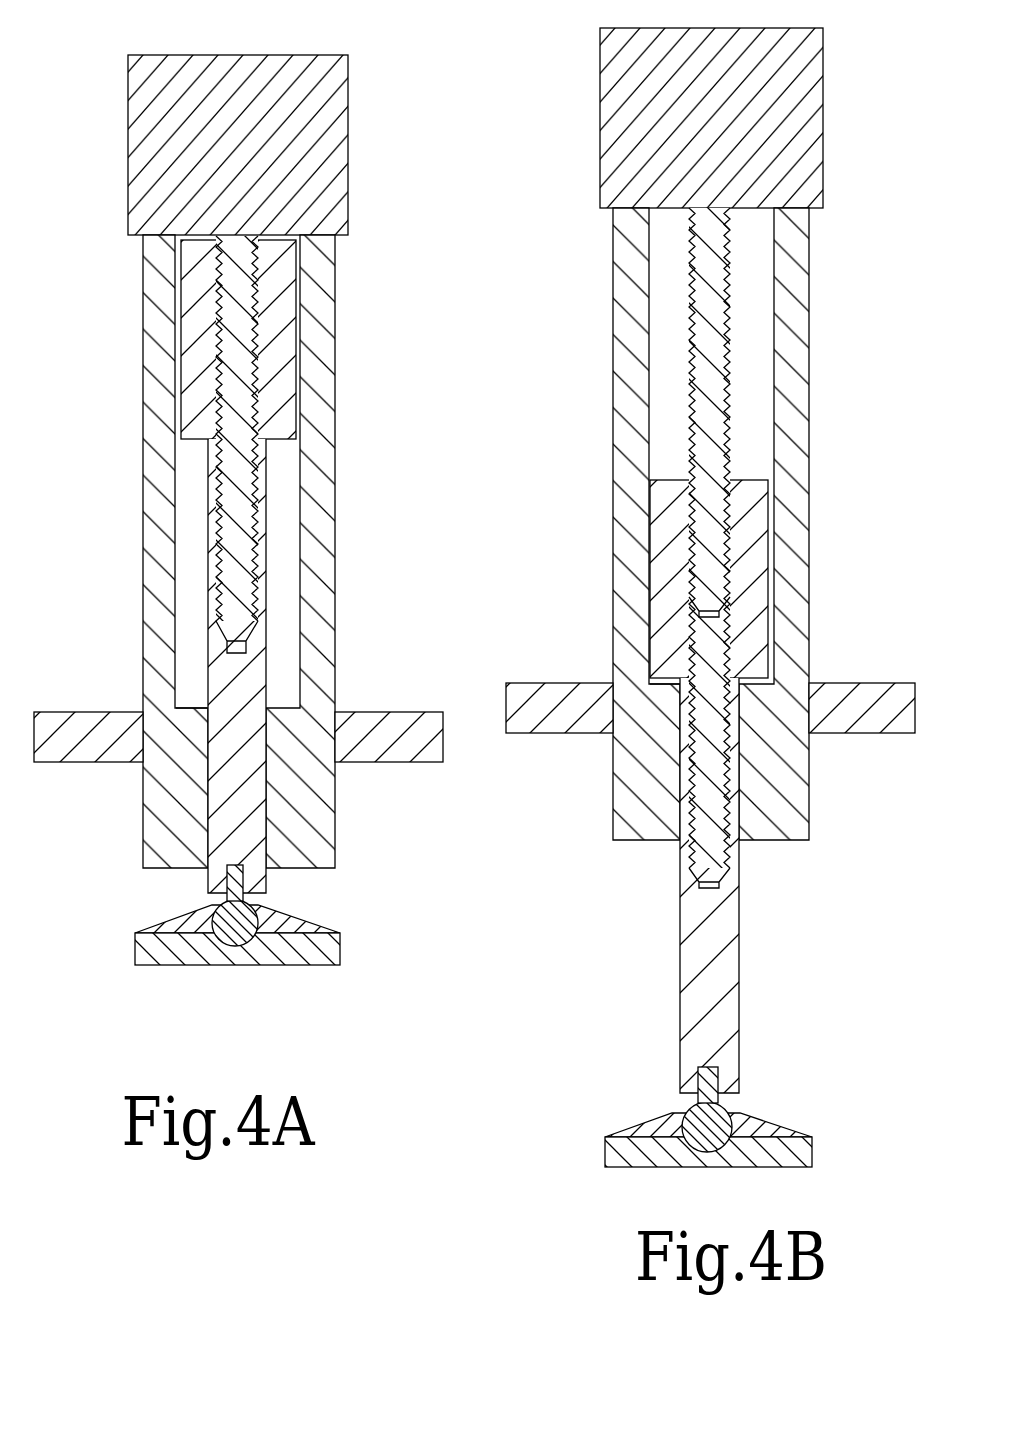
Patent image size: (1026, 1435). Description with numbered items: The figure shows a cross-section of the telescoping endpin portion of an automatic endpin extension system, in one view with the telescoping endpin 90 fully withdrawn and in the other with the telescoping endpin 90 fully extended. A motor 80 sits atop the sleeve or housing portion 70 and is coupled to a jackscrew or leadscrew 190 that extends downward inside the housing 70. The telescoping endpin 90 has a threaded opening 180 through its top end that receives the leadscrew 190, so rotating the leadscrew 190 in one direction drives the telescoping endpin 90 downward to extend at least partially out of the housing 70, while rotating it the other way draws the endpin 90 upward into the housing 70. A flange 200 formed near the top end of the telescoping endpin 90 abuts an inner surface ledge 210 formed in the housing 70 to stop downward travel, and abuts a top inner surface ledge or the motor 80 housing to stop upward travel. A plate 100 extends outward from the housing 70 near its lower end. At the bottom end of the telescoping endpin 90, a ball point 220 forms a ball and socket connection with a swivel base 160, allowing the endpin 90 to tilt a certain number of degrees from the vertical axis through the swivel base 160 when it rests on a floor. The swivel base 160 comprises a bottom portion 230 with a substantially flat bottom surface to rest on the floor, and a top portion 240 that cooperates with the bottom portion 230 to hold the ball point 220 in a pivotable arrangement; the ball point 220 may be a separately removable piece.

In FIG. 4A, the sleeve or housing portion 70 is at (143, 458).
In FIG. 4B, the sleeve or housing portion 70 is at (809, 503).
In FIG. 4A, the motor 80 is at (129, 156).
In FIG. 4B, the motor 80 is at (823, 108).
In FIG. 4A, the telescoping endpin 90 is at (205, 882).
In FIG. 4B, the telescoping endpin 90 is at (738, 995).
In FIG. 4A, the mounting plate 100 is at (90, 712).
In FIG. 4B, the mounting plate 100 is at (877, 733).
In FIG. 4A, the swivel base 160 is at (330, 933).
In FIG. 4B, the swivel base 160 is at (603, 1132).
In FIG. 4A, the threaded opening 180 is at (233, 647).
In FIG. 4B, the threaded opening 180 is at (707, 662).
In FIG. 4A, the leadscrew 190 is at (203, 330).
In FIG. 4B, the leadscrew 190 is at (733, 348).
In FIG. 4A, the flange 200 is at (203, 387).
In FIG. 4B, the flange 200 is at (672, 530).
In FIG. 4A, the inner surface ledge 210 is at (193, 707).
In FIG. 4B, the inner surface ledge 210 is at (664, 680).
In FIG. 4A, the ball point 220 is at (257, 910).
In FIG. 4B, the ball point 220 is at (677, 1112).
In FIG. 4A, the bottom portion 230 is at (167, 960).
In FIG. 4B, the bottom portion 230 is at (786, 1152).
In FIG. 4A, the top portion 240 is at (153, 928).
In FIG. 4B, the top portion 240 is at (788, 1128).